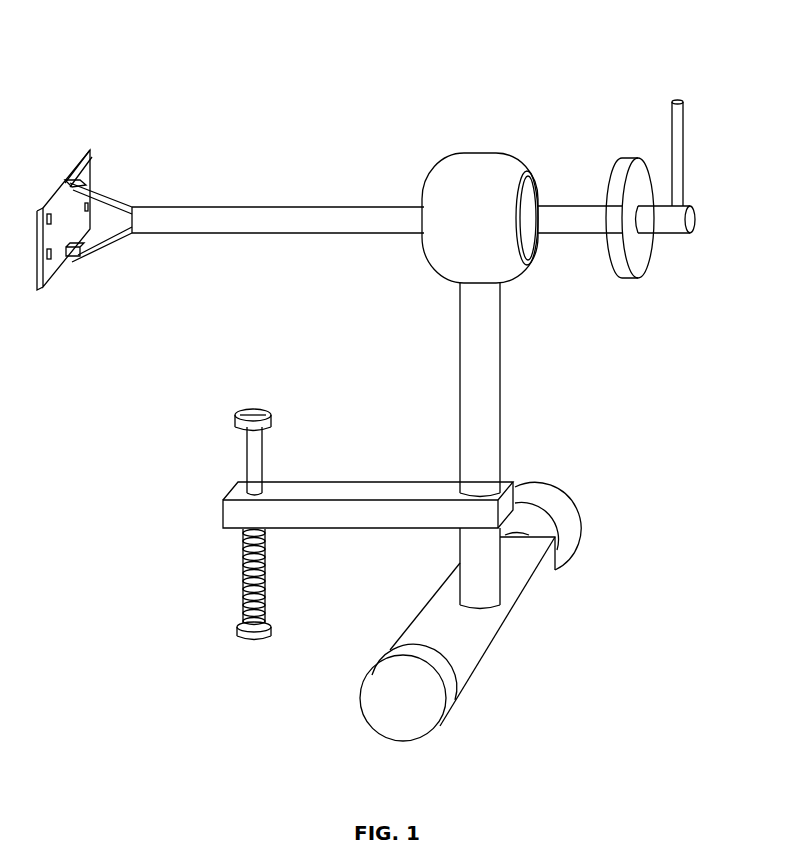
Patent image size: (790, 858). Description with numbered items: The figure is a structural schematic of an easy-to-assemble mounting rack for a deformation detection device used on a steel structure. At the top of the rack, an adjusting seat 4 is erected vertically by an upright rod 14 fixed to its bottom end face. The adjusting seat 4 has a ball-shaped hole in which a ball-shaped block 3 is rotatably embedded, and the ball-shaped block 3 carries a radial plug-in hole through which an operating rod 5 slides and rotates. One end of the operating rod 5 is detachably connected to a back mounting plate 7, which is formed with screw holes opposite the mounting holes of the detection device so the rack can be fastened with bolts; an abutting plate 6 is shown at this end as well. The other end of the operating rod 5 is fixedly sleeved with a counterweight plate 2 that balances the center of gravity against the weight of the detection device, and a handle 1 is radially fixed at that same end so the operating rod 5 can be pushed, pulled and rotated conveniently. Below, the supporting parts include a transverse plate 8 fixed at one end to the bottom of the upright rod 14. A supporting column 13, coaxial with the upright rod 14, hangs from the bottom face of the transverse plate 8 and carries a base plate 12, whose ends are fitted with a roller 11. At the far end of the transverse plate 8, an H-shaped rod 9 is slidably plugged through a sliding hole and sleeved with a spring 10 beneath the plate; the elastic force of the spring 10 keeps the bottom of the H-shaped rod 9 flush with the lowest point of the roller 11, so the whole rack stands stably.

The handle 1 is at (683, 167).
The counterweight plate 2 is at (638, 187).
The ball-shaped block 3 is at (533, 197).
The adjusting seat 4 is at (465, 197).
The operating rod 5 is at (282, 218).
The abutting plate 6 is at (122, 197).
The back mounting plate 7 is at (62, 210).
The transverse plate 8 is at (380, 500).
The H-shaped rod 9 is at (247, 453).
The spring 10 is at (243, 572).
The roller 11 is at (400, 720).
The base plate 12 is at (490, 655).
The supporting column 13 is at (490, 563).
The upright rod 14 is at (493, 392).